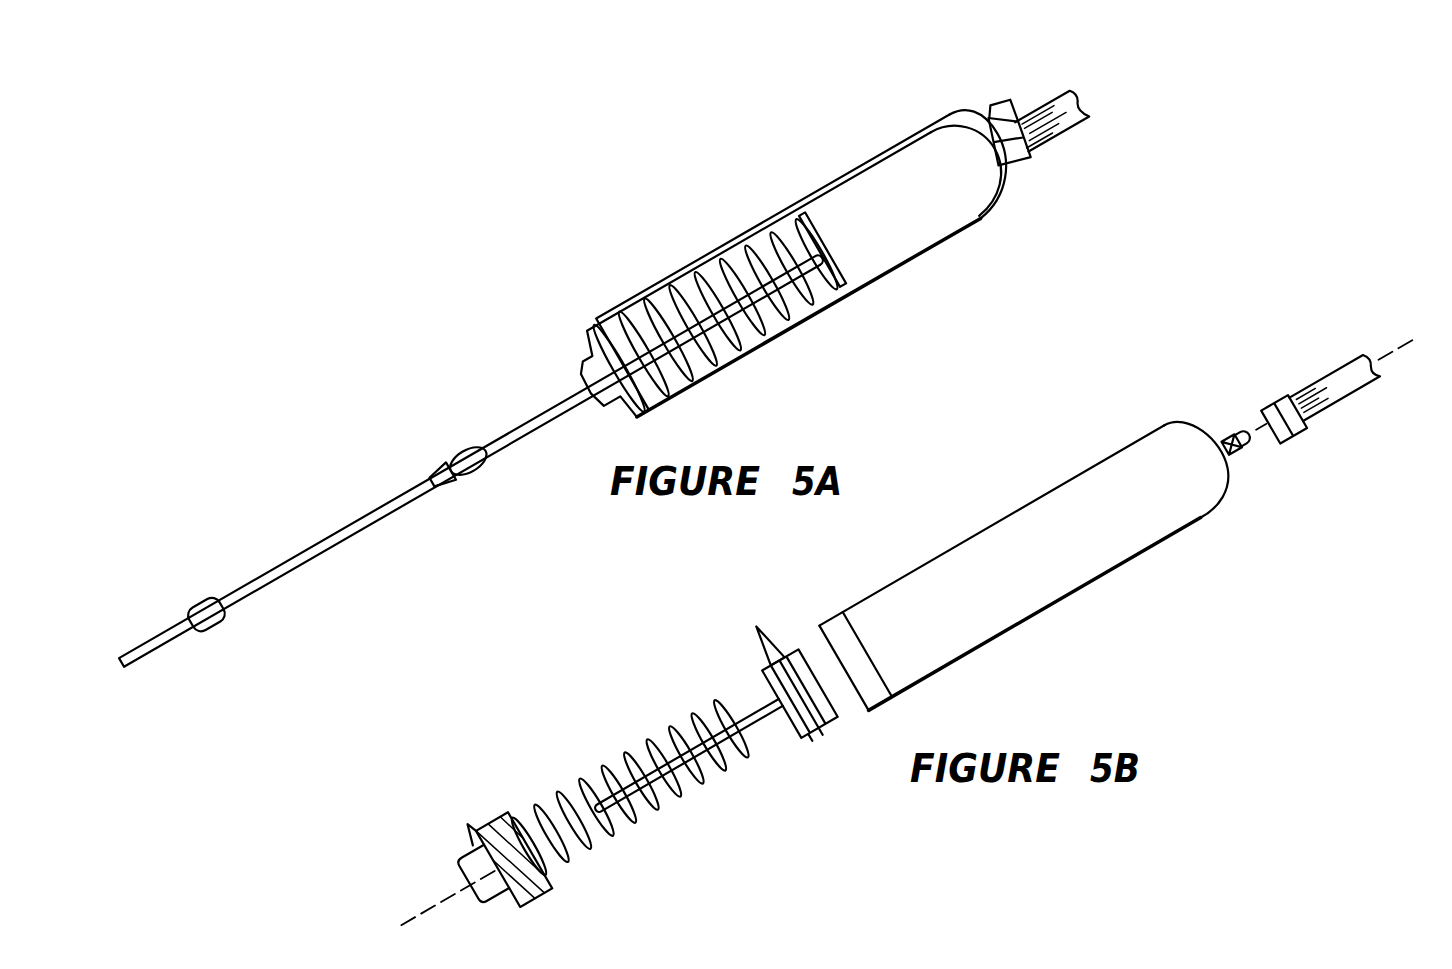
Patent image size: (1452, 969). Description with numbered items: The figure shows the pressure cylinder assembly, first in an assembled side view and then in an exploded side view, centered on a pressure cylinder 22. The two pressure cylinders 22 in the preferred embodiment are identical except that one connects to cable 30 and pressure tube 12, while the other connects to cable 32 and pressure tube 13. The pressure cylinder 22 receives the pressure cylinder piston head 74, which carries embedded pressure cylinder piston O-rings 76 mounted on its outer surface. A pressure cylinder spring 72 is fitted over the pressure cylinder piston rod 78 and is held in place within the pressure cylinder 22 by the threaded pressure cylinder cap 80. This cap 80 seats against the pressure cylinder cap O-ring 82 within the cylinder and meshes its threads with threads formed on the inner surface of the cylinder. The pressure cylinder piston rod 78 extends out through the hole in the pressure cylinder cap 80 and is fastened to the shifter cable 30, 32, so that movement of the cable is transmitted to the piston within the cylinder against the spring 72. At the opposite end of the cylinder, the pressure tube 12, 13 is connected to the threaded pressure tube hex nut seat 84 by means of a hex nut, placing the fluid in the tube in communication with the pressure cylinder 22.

In FIG. 5B, the pressure tube 12 is at (1282, 368).
In FIG. 5B, the pressure tube 13 is at (1322, 379).
In FIG. 5B, the pressure cylinder 22 is at (1016, 530).
In FIG. 5A, the cable 30 is at (493, 496).
In FIG. 5A, the cable 32 is at (298, 567).
In FIG. 5B, the pressure cylinder spring 72 is at (653, 735).
In FIG. 5B, the pressure cylinder piston head 74 is at (800, 650).
In FIG. 5B, the pressure cylinder piston O-rings 76 is at (758, 628).
In FIG. 5B, the pressure cylinder piston rod 78 is at (743, 710).
In FIG. 5B, the pressure cylinder cap 80 is at (500, 818).
In FIG. 5B, the pressure cylinder cap O-ring 82 is at (865, 647).
In FIG. 5B, the pressure tube hex nut seat 84 is at (1220, 437).